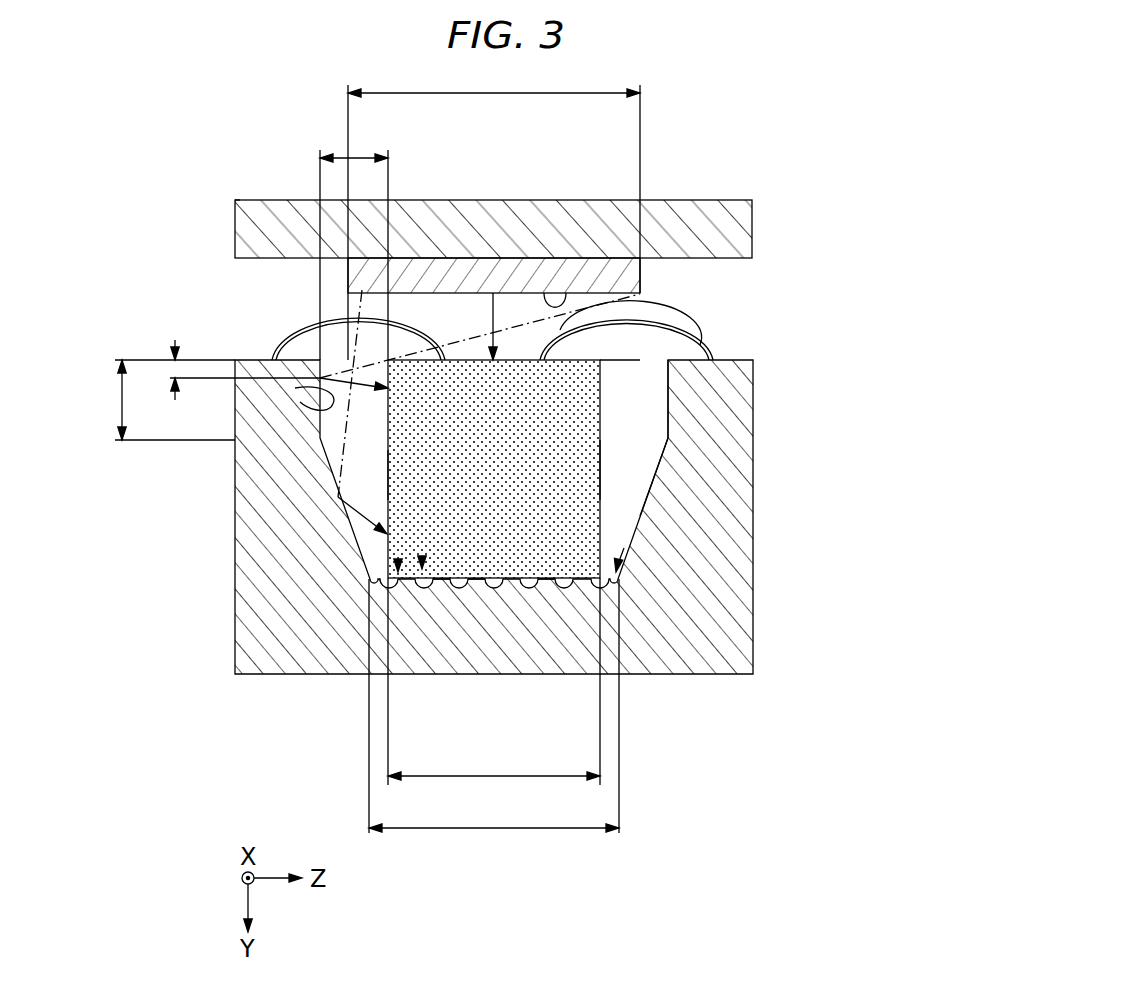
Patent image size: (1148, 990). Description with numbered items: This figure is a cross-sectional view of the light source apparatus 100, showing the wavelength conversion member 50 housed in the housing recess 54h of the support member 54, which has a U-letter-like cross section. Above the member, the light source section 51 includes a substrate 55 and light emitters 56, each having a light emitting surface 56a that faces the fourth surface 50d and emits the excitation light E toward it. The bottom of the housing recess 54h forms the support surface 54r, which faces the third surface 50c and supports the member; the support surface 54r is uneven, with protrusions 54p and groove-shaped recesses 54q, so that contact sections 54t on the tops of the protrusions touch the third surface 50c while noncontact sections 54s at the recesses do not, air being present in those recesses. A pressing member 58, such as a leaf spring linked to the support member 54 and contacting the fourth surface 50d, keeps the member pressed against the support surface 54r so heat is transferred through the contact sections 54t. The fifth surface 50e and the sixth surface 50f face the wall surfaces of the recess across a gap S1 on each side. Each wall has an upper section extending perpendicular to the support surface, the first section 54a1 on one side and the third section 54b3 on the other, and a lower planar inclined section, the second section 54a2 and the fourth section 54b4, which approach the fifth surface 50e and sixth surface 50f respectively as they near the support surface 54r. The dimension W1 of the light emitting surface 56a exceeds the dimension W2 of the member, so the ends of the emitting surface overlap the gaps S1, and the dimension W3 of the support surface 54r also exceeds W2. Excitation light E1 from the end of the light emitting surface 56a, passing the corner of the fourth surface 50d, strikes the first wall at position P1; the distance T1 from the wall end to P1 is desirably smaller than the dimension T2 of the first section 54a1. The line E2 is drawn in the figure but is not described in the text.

The light source apparatus 100 is at (246, 178).
The wavelength conversion member 50 is at (600, 414).
The third surface 50c is at (462, 585).
The fourth surface 50d is at (642, 360).
The fifth surface 50e is at (388, 477).
The sixth surface 50f is at (600, 472).
The light source section 51 is at (722, 192).
The support member 54 is at (754, 634).
The first section 54a1 is at (320, 378).
The second section 54a2 is at (337, 522).
The third section 54b3 is at (712, 357).
The fourth section 54b4 is at (650, 515).
The housing recess 54h is at (665, 362).
The protrusions 54p is at (422, 556).
The recesses 54q is at (398, 560).
The support surface 54r is at (624, 548).
The noncontact sections 54s is at (530, 587).
The contact sections 54t is at (480, 587).
The substrate 55 is at (668, 200).
The light emitters 56 is at (485, 265).
The light emitting surface 56a is at (560, 293).
The pressing member 58 is at (678, 323).
The gap S1 is at (332, 158).
The dimension of light emitting surface W1 is at (494, 209).
The dimension of wavelength conversion member W2 is at (494, 696).
The dimension of support surface W3 is at (494, 722).
The distance T1 is at (227, 370).
The dimension of first section T2 is at (159, 400).
The excitation light E is at (498, 316).
The excitation light E1 is at (480, 334).
The second inclined line E2 is at (360, 300).
The position P1 is at (320, 378).